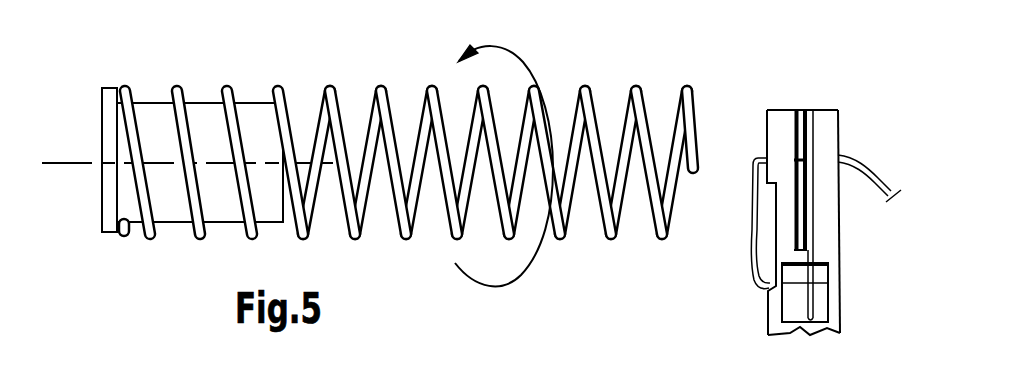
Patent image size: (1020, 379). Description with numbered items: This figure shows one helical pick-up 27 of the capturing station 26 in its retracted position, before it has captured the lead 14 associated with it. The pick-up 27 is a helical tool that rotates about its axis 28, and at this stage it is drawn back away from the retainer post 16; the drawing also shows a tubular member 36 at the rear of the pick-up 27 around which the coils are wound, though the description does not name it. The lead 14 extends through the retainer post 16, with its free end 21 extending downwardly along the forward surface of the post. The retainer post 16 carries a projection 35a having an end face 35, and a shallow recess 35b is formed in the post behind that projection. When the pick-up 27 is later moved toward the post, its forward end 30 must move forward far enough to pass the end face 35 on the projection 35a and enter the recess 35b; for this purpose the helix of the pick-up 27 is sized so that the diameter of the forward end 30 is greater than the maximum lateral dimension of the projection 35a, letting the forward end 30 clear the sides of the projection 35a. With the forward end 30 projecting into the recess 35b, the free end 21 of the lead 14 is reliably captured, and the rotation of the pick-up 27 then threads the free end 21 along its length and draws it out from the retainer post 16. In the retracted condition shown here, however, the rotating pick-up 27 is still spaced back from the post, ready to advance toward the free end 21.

The lead 14 is at (866, 166).
The retainer post 16 is at (829, 215).
The free end 21 is at (756, 209).
The capturing station 26 is at (706, 280).
The helical pick-up 27 is at (403, 228).
The axis 28 is at (73, 159).
The forward end 30 is at (691, 138).
The end face 35 is at (766, 127).
The projection 35a is at (783, 119).
The shallow recess 35b is at (779, 270).
The tubular core 36 is at (178, 208).